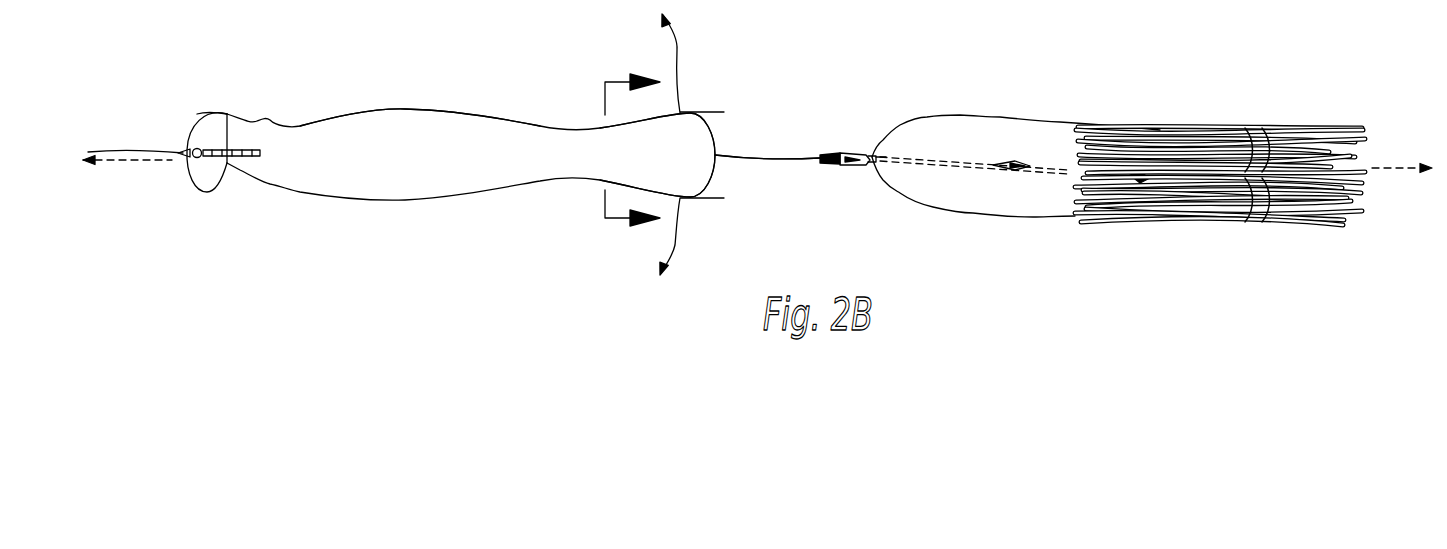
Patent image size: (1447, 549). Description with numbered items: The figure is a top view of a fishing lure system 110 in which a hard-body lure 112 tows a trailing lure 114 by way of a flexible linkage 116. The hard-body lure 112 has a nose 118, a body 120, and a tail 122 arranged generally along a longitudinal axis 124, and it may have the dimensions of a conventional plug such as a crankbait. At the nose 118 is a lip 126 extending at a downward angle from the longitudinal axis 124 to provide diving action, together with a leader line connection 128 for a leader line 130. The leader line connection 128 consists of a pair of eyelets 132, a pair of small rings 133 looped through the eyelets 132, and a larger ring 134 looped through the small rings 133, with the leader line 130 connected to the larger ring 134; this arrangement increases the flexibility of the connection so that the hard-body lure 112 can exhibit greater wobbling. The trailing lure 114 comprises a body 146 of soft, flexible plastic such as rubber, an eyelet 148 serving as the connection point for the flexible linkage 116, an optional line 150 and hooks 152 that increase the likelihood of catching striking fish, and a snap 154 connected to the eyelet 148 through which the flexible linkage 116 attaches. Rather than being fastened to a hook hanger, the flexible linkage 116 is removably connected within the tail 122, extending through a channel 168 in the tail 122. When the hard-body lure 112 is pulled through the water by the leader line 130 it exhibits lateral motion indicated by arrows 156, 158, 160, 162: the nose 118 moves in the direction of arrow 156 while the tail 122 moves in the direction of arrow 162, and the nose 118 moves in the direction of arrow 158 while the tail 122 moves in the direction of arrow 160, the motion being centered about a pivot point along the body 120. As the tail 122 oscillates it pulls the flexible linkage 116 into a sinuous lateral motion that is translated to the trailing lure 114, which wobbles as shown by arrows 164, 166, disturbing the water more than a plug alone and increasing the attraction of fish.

The fishing lure system 110 is at (816, 76).
The hard-body lure 112 is at (387, 222).
The trailing lure 114 is at (1064, 105).
The flexible linkage 116 is at (778, 184).
The nose 118 is at (208, 230).
The body 120 is at (468, 214).
The tail 122 is at (584, 245).
The longitudinal axis 124 is at (150, 163).
The lip 126 is at (207, 183).
The leader line connection 128 is at (195, 128).
The leader line 130 is at (113, 150).
The eyelets 132 is at (225, 157).
The small rings 133 is at (195, 132).
The larger ring 134 is at (222, 165).
The body 146 is at (990, 127).
The eyelet 148 is at (887, 155).
The line 150 is at (1040, 173).
The hooks 152 is at (995, 173).
The snap 154 is at (853, 150).
The arrow 156 is at (238, 0).
The arrow 158 is at (245, 272).
The arrow 160 is at (680, 68).
The arrow 162 is at (677, 228).
The arrow 164 is at (1110, 79).
The arrow 166 is at (1110, 227).
The channel 168 is at (739, 136).